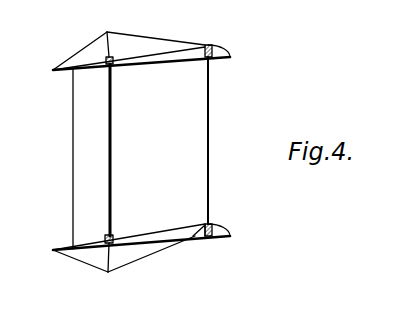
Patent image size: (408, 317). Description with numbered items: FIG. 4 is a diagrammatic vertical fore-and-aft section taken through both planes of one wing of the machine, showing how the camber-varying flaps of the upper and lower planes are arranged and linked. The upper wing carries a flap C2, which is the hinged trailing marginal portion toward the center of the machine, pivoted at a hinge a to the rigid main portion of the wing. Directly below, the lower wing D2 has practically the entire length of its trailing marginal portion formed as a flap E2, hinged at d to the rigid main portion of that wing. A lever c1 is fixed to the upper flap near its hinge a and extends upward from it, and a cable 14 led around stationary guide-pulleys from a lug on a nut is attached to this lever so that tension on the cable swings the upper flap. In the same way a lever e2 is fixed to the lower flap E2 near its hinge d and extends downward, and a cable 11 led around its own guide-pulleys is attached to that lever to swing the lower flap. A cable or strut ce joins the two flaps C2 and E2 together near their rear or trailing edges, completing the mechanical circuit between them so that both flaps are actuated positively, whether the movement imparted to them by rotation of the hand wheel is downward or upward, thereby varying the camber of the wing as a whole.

The cable 14 is at (153, 41).
The lever c1 is at (105, 47).
The flap C2 is at (82, 62).
The hinge a is at (108, 64).
The cable or strut ce is at (73, 143).
The hinge d is at (105, 238).
The wing D2 is at (163, 226).
The cable 11 is at (148, 253).
The flap E2 is at (82, 249).
The lever e2 is at (105, 255).